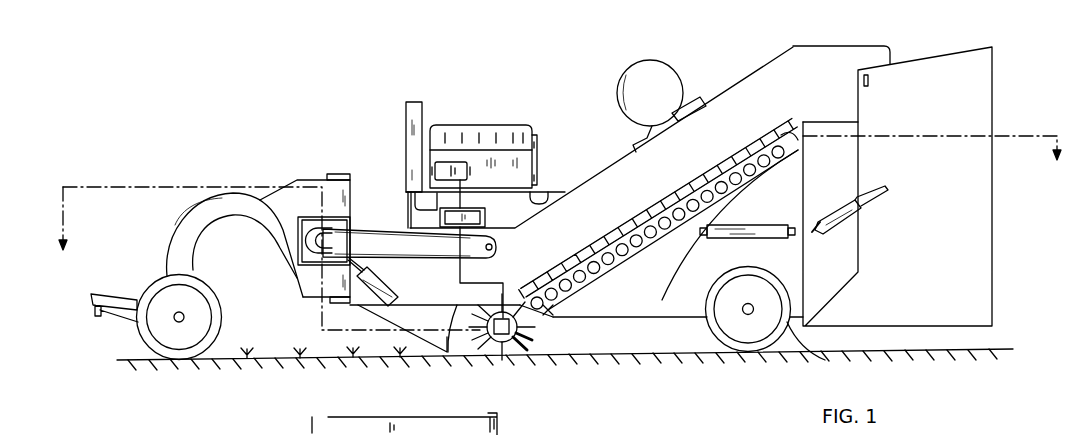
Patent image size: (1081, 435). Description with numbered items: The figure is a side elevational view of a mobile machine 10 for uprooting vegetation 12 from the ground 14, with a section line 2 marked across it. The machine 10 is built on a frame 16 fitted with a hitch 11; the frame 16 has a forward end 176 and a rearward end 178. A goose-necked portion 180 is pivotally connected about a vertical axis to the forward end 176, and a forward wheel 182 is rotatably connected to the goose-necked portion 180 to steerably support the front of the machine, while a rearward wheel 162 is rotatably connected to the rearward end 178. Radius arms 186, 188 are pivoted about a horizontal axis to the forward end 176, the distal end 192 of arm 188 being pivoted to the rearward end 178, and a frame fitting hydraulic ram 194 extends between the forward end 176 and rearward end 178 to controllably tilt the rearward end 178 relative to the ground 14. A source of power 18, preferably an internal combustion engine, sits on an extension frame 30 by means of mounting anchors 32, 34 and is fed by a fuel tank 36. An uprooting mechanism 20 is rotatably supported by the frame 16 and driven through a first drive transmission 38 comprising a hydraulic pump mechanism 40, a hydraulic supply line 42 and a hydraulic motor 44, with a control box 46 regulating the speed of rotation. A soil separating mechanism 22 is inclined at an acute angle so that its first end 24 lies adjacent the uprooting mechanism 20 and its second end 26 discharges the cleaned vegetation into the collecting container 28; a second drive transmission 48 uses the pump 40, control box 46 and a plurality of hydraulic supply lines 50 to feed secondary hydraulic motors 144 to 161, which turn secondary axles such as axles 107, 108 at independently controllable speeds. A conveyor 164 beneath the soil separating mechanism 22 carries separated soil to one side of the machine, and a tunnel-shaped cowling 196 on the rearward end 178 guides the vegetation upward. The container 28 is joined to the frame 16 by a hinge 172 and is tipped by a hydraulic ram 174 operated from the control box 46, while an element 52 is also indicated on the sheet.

The section line 2- 2 is at (560, 233).
The mobile machine 10 is at (298, 131).
The hitch 11 is at (133, 278).
The vegetation 12 is at (238, 352).
The ground 14 is at (937, 352).
The frame 16 is at (645, 310).
The source of power 18 is at (500, 125).
The uprooting mechanism 20 is at (481, 358).
The soil separating mechanism 22 is at (730, 145).
The first end 24 is at (560, 320).
The second end 26 is at (758, 133).
The collecting container 28 is at (968, 243).
The extension frame 30 is at (407, 222).
The mounting anchor 32 is at (418, 208).
The mounting anchor 34 is at (547, 193).
The fuel tank 36 is at (617, 92).
The first drive transmission 38 is at (462, 273).
The hydraulic pump mechanism 40 is at (456, 160).
The hydraulic supply line 42 is at (460, 283).
The hydraulic motor 44 is at (528, 352).
The control box 46 is at (478, 220).
The second drive transmission 48 is at (576, 203).
The hydraulic supply lines 50 is at (695, 160).
The element 52 (FIG. 2) 52 is at (505, 434).
The secondary axle 107 is at (663, 434).
The secondary axle 108 is at (674, 425).
The secondary hydraulic motor 144 is at (535, 296).
The secondary hydraulic motor 161 is at (778, 146).
The rearward wheel 162 is at (820, 357).
The conveyor 164 is at (762, 223).
The hinge 172 is at (870, 80).
The hydraulic ram 174 is at (840, 228).
The forward end 176 is at (302, 230).
The rearward end 178 is at (875, 35).
The goose-necked portion 180 is at (180, 238).
The forward wheel 182 is at (137, 328).
The radius arm 186 is at (342, 248).
The radius arm 188 is at (328, 418).
The distal end 192 is at (470, 418).
The frame fitting hydraulic ram 194 is at (382, 280).
The tunnel-shaped cowling 196 is at (717, 100).